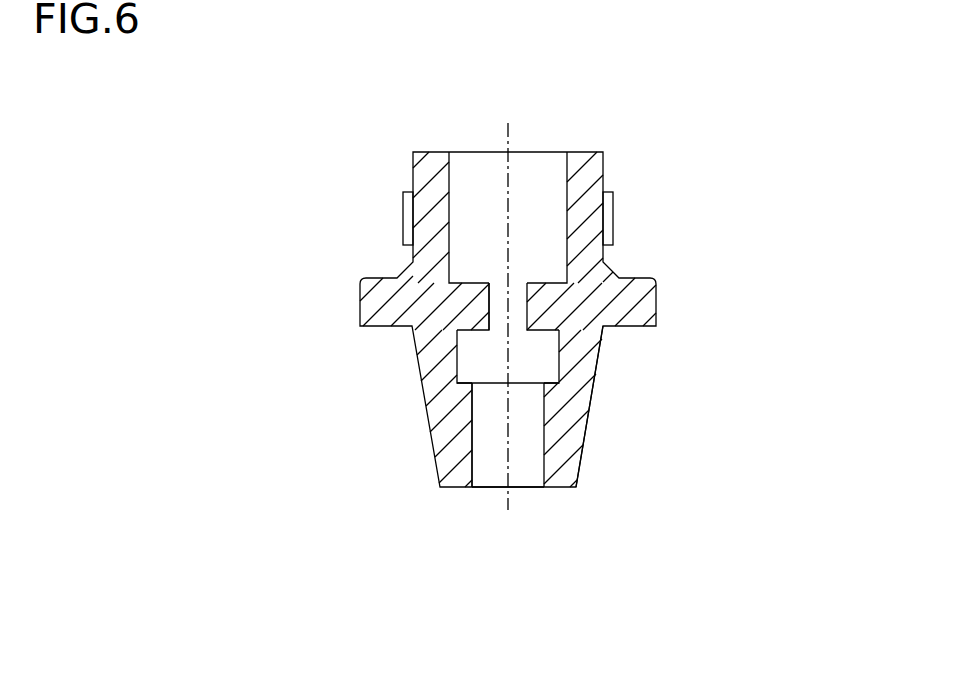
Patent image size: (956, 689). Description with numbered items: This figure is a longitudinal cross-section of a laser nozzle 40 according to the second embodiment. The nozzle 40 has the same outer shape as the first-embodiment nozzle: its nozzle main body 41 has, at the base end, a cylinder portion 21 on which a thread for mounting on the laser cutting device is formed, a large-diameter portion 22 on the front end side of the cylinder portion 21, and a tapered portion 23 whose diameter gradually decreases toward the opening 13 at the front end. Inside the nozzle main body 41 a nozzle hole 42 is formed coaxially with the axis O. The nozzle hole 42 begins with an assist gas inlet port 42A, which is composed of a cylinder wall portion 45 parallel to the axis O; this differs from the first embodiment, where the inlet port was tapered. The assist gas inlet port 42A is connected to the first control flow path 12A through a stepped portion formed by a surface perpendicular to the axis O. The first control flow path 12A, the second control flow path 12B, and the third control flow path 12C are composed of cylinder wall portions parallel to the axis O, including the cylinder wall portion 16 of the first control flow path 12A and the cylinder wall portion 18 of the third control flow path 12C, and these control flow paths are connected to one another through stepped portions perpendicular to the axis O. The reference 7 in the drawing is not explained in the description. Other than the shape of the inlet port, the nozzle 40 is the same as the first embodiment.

The nozzle 40 is at (719, 177).
The axis O is at (512, 141).
The cylinder portion 21 is at (603, 171).
The cylinder wall portion 45 is at (448, 196).
The large-diameter portion 22 is at (657, 300).
The tapered portion 23 is at (588, 432).
The nozzle main body 41 is at (587, 362).
The nozzle hole 42 is at (251, 245).
The assist gas inlet port 42A is at (490, 225).
The first control flow path 12A is at (490, 288).
The second control flow path 12B is at (458, 348).
The third control flow path 12C is at (490, 415).
The cylinder wall portion 16 is at (487, 323).
The chamber 7 is at (490, 366).
The cylinder wall portion 18 is at (474, 437).
The opening 13 is at (527, 488).